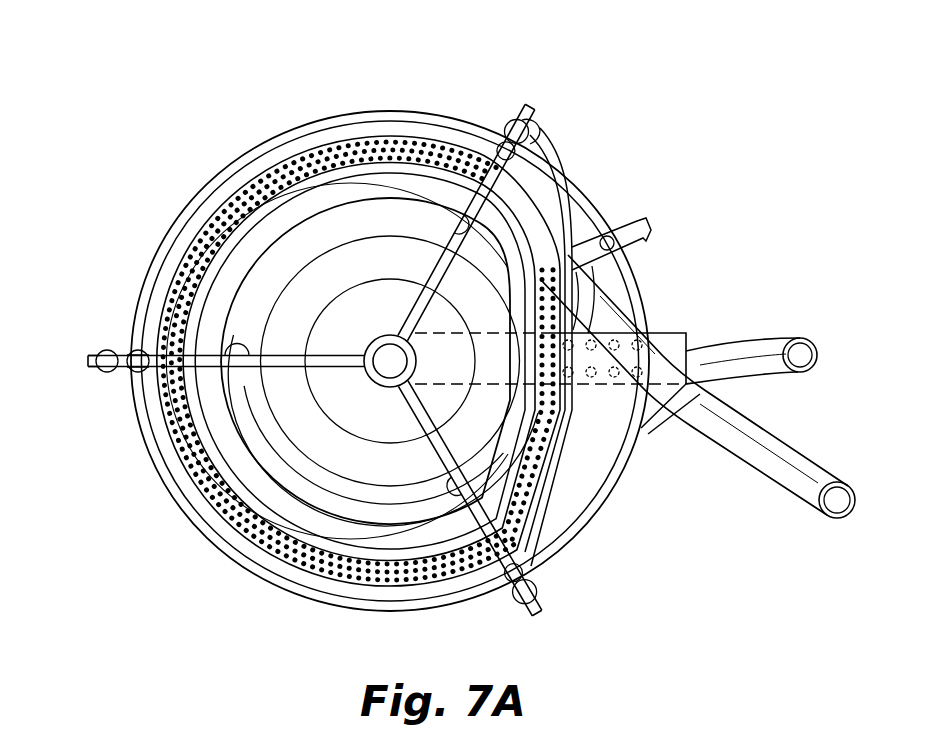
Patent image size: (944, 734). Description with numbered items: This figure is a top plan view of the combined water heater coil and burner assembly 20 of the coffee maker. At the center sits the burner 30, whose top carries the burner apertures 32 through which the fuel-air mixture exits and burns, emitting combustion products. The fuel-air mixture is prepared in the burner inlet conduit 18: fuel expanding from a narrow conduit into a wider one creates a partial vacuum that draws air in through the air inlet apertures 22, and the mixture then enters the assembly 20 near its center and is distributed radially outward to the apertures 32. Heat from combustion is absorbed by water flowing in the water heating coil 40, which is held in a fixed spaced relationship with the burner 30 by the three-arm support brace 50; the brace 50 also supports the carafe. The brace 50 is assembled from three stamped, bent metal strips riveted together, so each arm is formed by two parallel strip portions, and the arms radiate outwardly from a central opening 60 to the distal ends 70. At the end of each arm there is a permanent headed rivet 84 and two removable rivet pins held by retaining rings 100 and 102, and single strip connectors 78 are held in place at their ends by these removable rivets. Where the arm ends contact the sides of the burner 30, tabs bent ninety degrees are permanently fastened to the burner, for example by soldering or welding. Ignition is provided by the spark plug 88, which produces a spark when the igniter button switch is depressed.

The burner assembly 20 is at (752, 105).
The burner 30 is at (254, 158).
The burner apertures 32 is at (380, 150).
The retaining ring 102 is at (224, 404).
The central opening 60 is at (381, 352).
The support brace 50 is at (401, 392).
The single strip connector 78 is at (158, 356).
The permanent headed rivet 84 is at (88, 371).
The retaining ring 100 is at (497, 120).
The distal end 70 is at (540, 113).
The spark plug 88 is at (597, 224).
The burner inlet conduit 18 is at (663, 332).
The water heating coil 40 is at (720, 338).
The air inlet apertures 22 is at (656, 438).